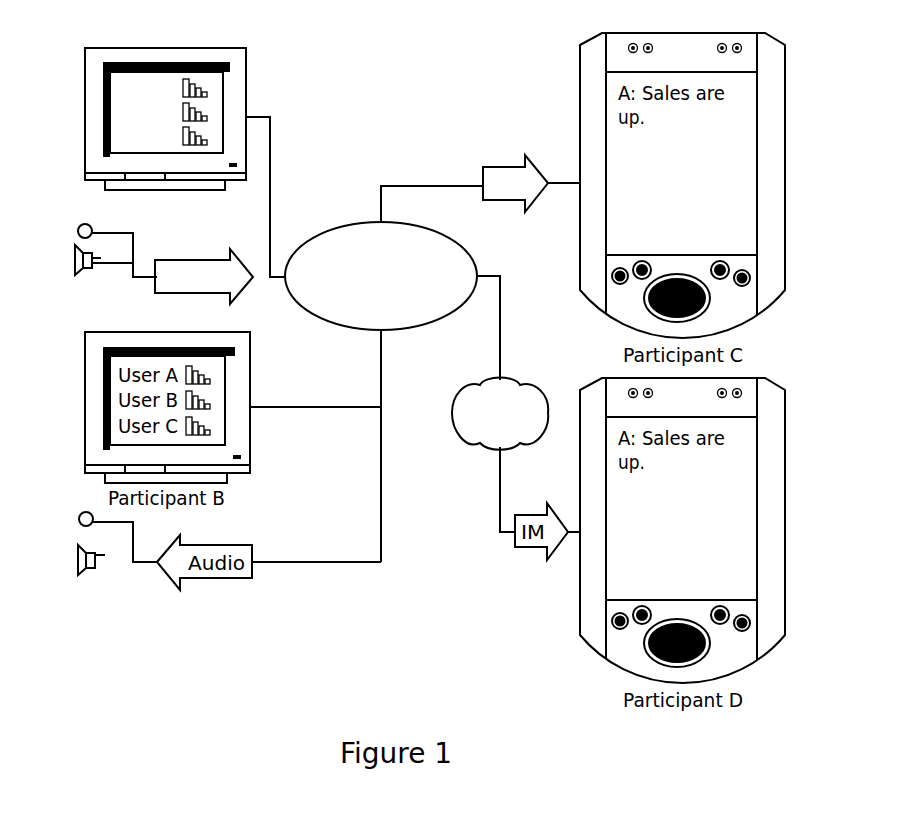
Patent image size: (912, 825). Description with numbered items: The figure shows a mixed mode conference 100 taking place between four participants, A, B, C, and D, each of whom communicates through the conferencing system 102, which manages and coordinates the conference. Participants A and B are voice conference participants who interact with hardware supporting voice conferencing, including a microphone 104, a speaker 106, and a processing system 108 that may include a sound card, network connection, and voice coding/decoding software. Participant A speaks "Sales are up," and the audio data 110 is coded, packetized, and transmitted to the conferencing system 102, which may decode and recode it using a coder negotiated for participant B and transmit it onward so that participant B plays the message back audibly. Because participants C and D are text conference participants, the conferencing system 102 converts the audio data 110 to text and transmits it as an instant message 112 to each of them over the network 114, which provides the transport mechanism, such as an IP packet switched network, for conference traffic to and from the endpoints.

The mixed mode conference 100 is at (143, 650).
The conferencing system 102 is at (398, 322).
The microphone 104 is at (78, 230).
The speaker 106 is at (72, 252).
The processing system 108 is at (85, 57).
The audio data 110 is at (157, 293).
The instant message 112 is at (483, 170).
The network 114 is at (473, 447).